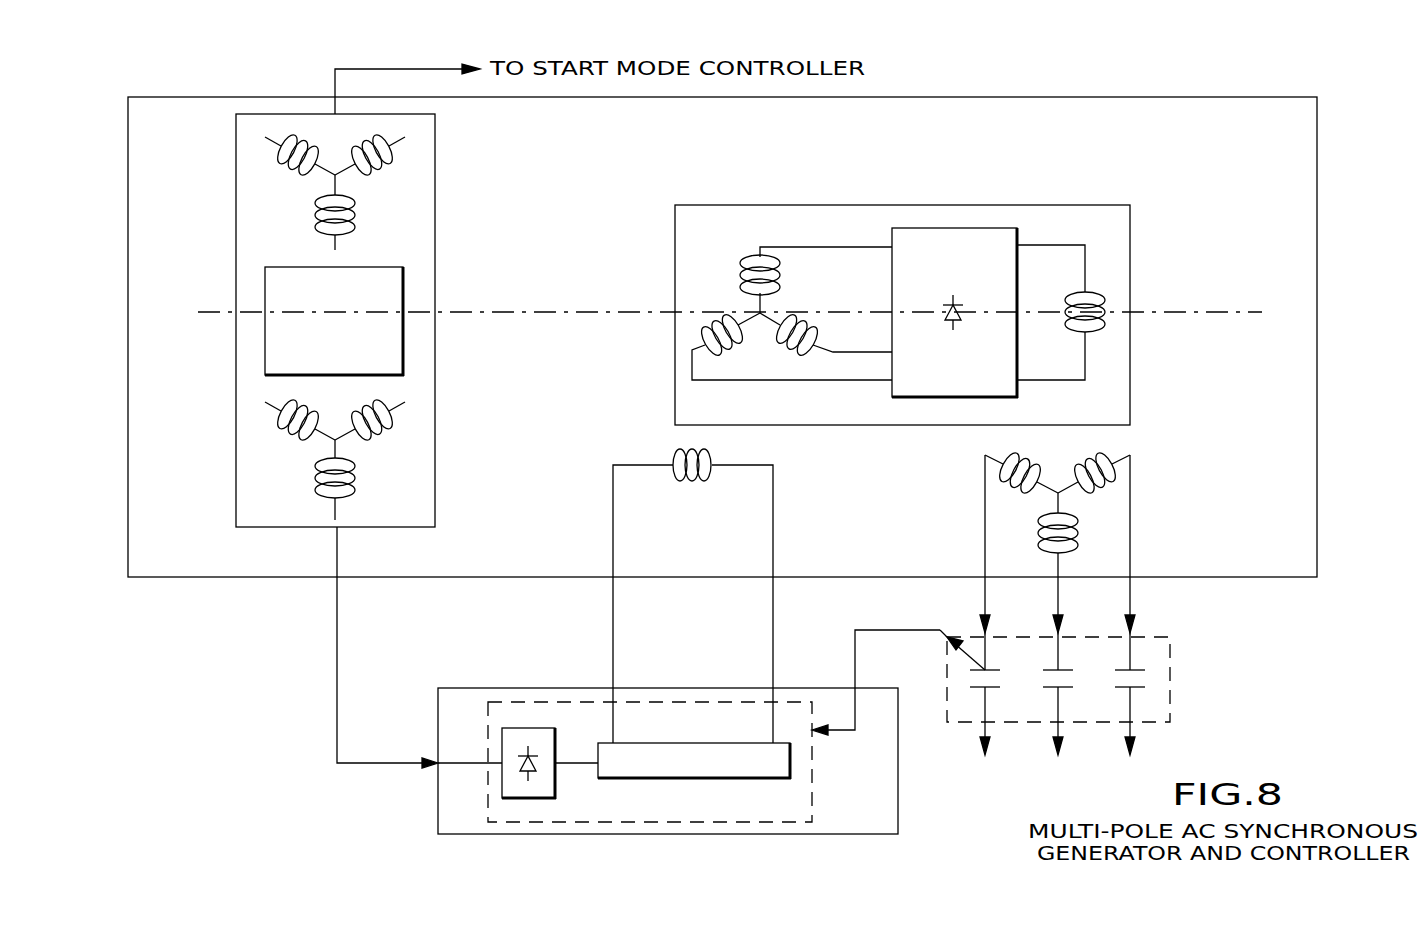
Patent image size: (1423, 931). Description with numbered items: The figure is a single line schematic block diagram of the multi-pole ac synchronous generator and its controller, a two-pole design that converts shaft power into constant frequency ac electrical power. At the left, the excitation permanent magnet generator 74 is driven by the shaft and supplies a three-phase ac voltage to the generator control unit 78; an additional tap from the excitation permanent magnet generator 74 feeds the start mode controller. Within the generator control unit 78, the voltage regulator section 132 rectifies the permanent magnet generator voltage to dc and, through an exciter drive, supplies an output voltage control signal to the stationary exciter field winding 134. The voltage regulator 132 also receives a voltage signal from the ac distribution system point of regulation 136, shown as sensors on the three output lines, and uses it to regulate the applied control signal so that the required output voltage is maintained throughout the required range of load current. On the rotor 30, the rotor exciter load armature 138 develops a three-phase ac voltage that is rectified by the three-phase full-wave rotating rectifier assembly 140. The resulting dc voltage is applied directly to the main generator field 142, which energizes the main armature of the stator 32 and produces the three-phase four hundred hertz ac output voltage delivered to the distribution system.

The rotor 30 is at (725, 205).
The stator 32 is at (1058, 502).
The excitation permanent magnet generator 74 is at (436, 475).
The generator control unit 78 is at (711, 745).
The voltage regulator 132 is at (677, 742).
The exciter field winding 134 is at (673, 480).
The point of regulation 136 is at (985, 670).
The rotor exciter load armature 138 is at (755, 312).
The rotating rectifier assembly 140 is at (958, 228).
The main generator field 142 is at (1098, 295).